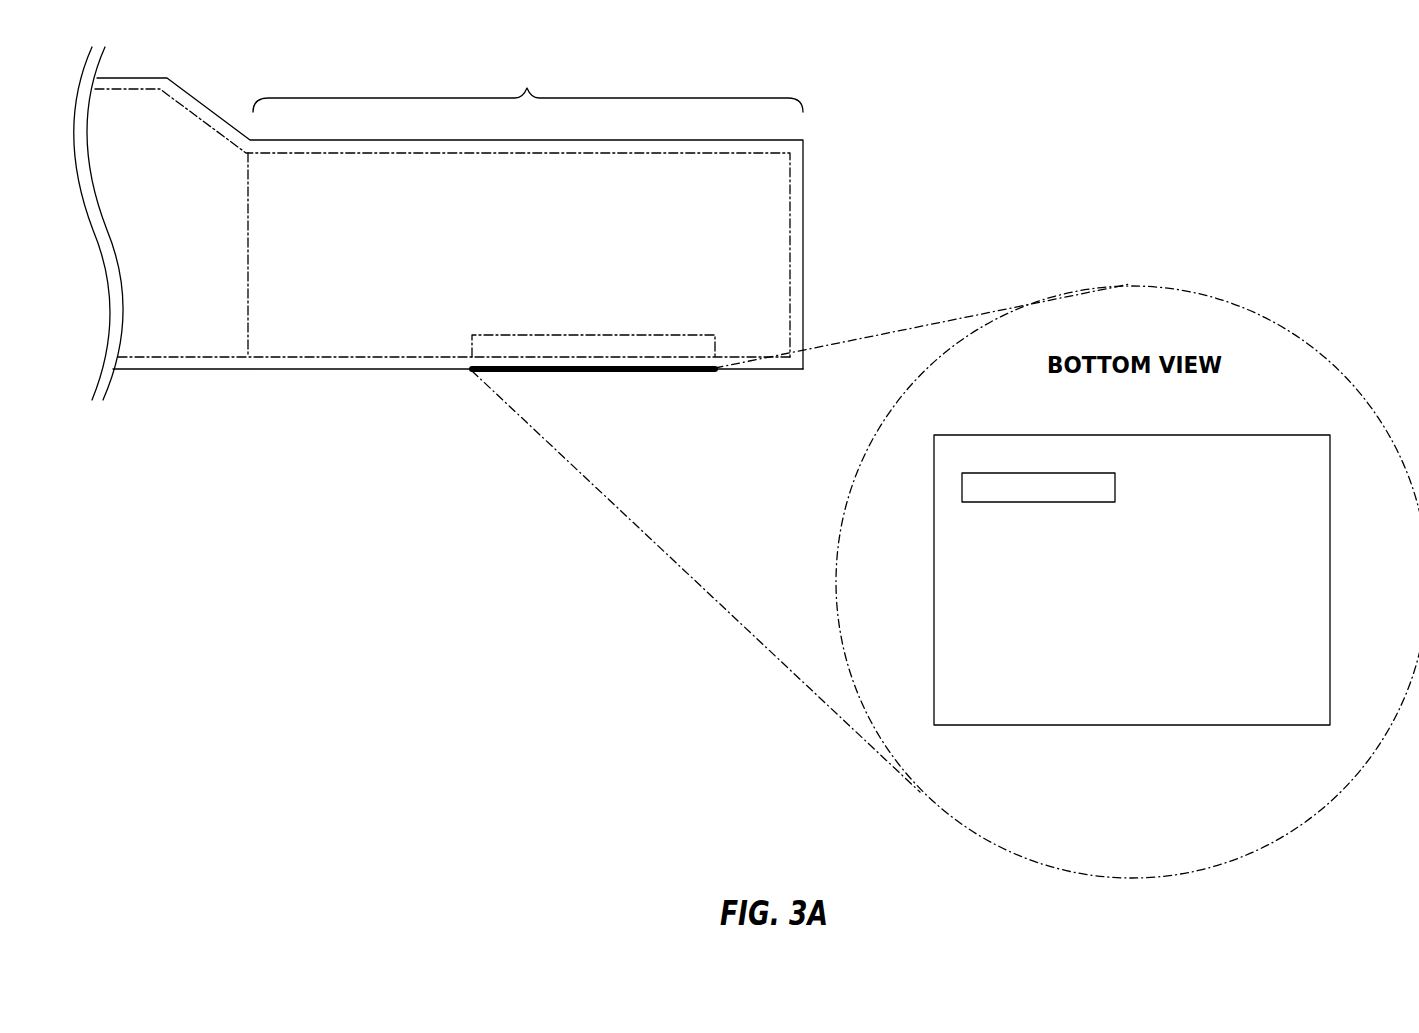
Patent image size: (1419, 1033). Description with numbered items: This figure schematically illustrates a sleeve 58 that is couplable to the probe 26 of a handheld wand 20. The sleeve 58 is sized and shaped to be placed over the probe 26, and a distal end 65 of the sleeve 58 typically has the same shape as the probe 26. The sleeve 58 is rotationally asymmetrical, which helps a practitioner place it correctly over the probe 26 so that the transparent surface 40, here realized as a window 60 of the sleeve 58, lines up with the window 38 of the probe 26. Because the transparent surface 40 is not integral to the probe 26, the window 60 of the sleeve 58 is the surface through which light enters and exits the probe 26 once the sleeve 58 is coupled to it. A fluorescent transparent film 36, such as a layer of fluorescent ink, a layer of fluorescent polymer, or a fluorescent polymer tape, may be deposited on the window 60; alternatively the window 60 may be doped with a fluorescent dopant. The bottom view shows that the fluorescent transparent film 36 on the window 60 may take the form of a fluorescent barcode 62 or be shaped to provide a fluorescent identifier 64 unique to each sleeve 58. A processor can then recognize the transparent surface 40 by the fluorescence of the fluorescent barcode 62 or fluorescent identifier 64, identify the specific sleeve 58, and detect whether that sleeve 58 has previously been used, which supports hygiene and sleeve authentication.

The handheld wand 20 is at (206, 376).
The probe 26 is at (710, 144).
The fluorescent transparent film 36 is at (1106, 451).
The window 38 is at (673, 335).
The transparent surface 40 is at (647, 373).
The sleeve 58 is at (283, 372).
The window 60 is at (1280, 435).
The fluorescent barcode 62 is at (1038, 487).
The fluorescent identifier 64 is at (1118, 487).
The distal end 65 is at (528, 85).